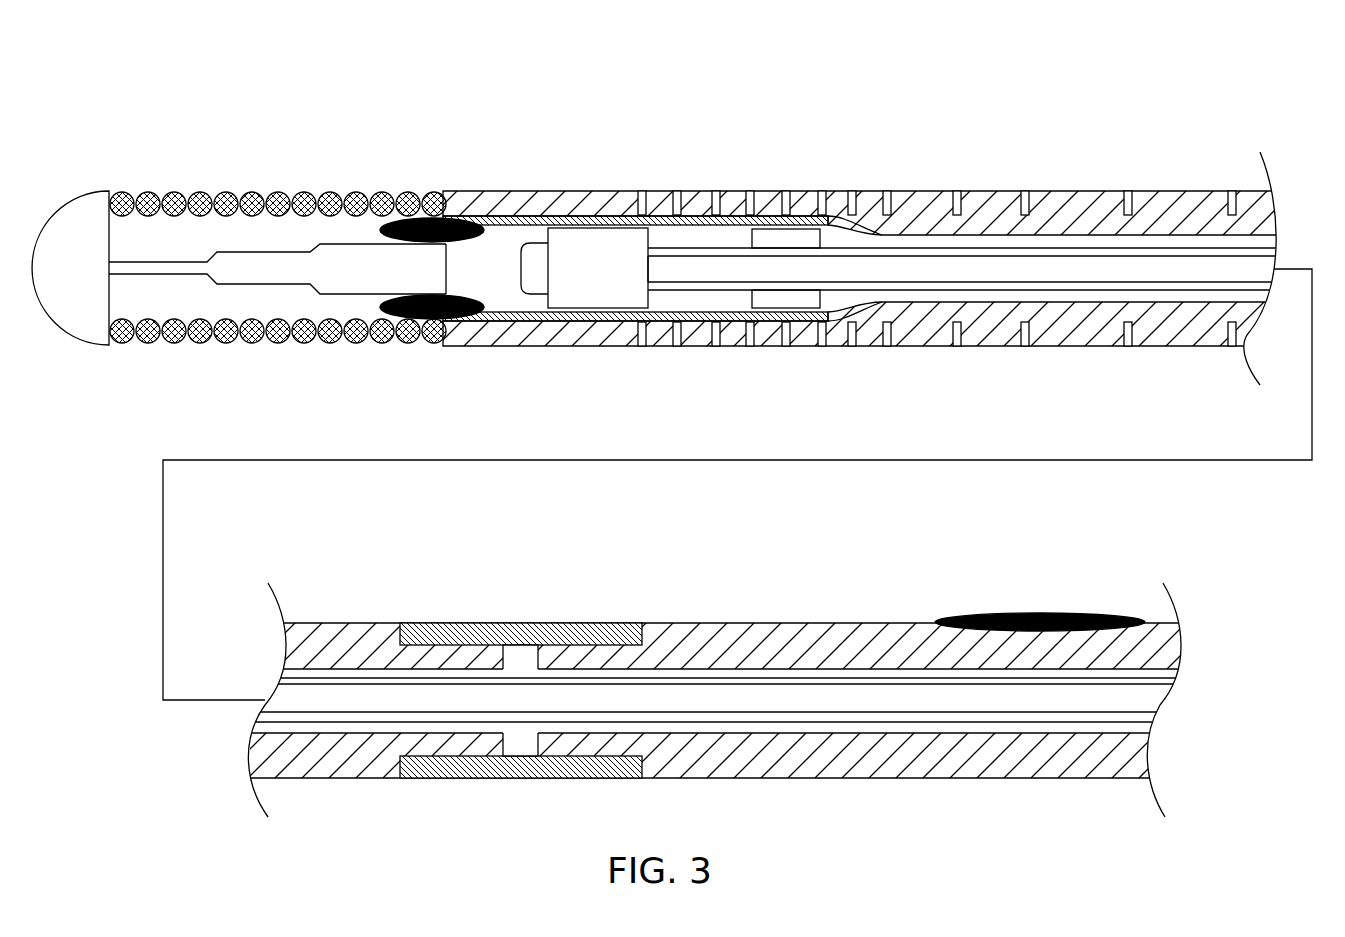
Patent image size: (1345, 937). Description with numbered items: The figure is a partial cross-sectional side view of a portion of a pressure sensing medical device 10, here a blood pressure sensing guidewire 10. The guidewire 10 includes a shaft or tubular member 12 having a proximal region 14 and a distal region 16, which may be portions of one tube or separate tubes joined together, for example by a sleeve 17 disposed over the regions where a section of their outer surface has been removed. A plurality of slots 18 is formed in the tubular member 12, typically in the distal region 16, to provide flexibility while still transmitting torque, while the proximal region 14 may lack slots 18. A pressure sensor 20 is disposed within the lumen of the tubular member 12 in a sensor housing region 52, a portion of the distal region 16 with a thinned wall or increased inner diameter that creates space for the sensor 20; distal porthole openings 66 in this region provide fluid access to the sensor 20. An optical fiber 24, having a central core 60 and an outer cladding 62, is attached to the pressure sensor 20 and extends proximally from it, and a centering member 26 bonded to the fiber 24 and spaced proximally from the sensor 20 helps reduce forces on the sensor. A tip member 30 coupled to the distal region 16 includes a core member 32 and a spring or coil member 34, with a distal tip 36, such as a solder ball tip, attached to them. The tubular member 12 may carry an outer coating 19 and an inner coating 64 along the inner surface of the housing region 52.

The blood pressure sensing guidewire 10 is at (855, 78).
The tubular member 12 is at (1175, 190).
The proximal region 14 is at (845, 623).
The distal region 16 is at (995, 190).
The sleeve 17 is at (518, 623).
The slots 18 is at (680, 191).
The outer coating 19 is at (1040, 614).
The pressure sensor 20 is at (607, 292).
The optical fiber 24 is at (1081, 285).
The centering member 26 is at (818, 236).
The tip member 30 is at (188, 190).
The core member 32 is at (255, 270).
The spring or coil member 34 is at (281, 190).
The distal tip 36 is at (86, 212).
The sensor housing region 52 is at (875, 352).
The central core 60 is at (1193, 270).
The outer cladding 62 is at (1077, 253).
The inner coating 64 is at (769, 230).
The distal porthole openings 66 is at (541, 282).